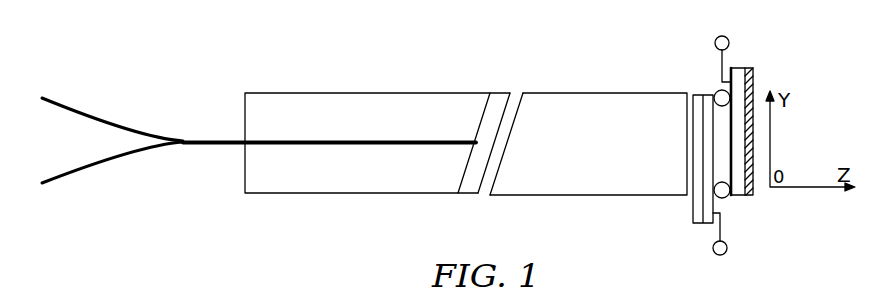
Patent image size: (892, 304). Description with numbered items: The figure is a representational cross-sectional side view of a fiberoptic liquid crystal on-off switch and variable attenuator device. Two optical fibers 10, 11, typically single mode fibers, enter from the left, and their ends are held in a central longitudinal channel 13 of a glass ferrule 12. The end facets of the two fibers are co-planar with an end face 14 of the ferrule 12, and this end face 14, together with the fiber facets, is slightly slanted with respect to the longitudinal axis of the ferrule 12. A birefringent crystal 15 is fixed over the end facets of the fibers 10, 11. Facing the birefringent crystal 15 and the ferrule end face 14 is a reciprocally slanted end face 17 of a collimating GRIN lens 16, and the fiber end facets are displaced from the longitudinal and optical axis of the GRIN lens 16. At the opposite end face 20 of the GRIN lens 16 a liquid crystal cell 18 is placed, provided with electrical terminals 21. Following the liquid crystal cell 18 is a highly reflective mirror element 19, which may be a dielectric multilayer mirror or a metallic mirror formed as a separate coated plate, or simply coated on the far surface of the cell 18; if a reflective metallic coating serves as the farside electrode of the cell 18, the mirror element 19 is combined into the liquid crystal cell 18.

The optical fiber 10 is at (86, 114).
The optical fiber 11 is at (75, 170).
The glass ferrule 12 is at (327, 110).
The central longitudinal channel 13 is at (319, 146).
The end face 14 is at (463, 183).
The birefringent crystal 15 is at (495, 123).
The collimating GRIN lens 16 is at (609, 108).
The reciprocally slanted end face 17 is at (528, 93).
The liquid crystal cell 18 is at (712, 79).
The mirror element 19 is at (755, 191).
The opposite end face 20 is at (693, 183).
The electrical terminals 21 is at (728, 37).